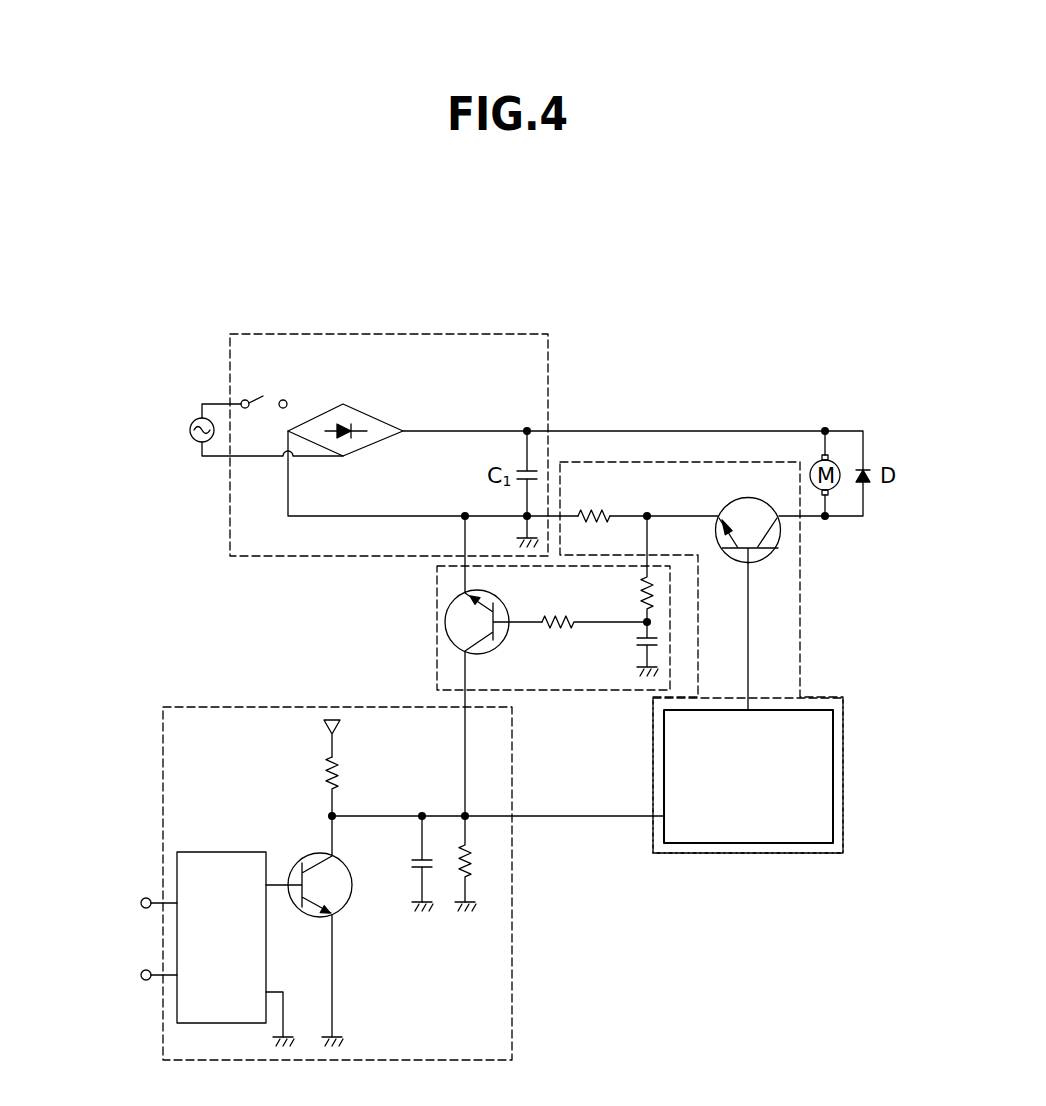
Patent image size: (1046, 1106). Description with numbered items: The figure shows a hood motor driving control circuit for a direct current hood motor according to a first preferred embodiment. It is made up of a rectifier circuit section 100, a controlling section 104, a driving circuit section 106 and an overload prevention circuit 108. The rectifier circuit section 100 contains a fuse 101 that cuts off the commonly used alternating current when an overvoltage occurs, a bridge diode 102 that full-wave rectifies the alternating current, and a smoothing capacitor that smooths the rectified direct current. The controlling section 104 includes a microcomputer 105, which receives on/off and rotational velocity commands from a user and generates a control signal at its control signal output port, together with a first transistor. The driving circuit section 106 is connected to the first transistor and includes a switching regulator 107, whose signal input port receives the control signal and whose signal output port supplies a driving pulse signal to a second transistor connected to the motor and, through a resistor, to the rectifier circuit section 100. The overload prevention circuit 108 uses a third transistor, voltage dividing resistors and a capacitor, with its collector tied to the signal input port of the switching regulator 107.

The rectifier circuit section 100 is at (403, 334).
The fuse 101 is at (263, 396).
The bridge diode 102 is at (375, 418).
The controlling section 104 is at (513, 985).
The microcomputer 105 is at (225, 852).
The driving circuit section 106 is at (800, 655).
The switching regulator 107 is at (833, 760).
The overload prevention circuit 108 is at (437, 630).